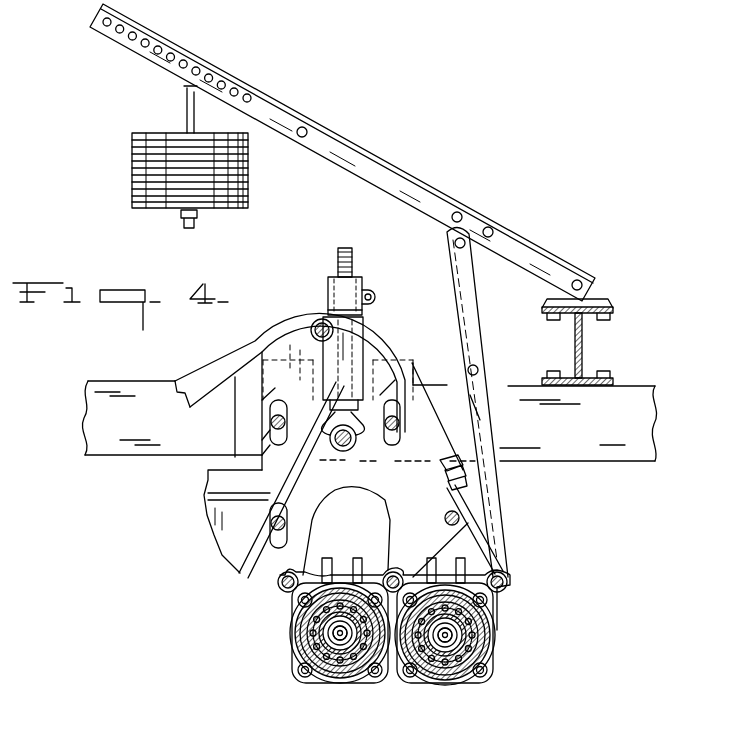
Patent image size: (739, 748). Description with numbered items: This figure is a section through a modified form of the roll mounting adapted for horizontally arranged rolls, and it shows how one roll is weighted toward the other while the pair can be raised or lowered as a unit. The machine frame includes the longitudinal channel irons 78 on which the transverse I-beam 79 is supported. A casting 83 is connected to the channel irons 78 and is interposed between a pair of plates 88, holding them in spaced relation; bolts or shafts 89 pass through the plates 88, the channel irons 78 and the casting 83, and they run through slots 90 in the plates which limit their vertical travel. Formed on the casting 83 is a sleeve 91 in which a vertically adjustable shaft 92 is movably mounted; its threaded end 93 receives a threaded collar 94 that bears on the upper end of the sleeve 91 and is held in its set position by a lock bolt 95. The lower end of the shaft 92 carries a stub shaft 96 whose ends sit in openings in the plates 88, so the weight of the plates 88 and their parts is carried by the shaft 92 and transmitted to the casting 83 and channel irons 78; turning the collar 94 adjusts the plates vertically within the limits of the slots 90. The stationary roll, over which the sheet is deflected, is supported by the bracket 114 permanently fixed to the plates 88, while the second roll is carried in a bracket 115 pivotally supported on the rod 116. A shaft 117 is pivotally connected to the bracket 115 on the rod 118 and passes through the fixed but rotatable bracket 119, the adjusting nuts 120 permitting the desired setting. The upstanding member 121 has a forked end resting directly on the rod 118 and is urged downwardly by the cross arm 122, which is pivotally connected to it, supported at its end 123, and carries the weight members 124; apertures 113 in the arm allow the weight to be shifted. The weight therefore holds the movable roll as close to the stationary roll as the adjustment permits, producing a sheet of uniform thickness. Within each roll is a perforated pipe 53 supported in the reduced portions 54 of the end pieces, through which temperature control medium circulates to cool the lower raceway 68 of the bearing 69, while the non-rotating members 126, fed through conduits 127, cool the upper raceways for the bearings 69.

The perforated pipe 53 is at (333, 683).
The reduced portion of end piece 54 is at (500, 630).
The lower raceway 68 is at (317, 648).
The bearing 69 is at (315, 633).
The channel iron 78 is at (632, 397).
The transverse I-beam 79 is at (581, 343).
The casting 83 is at (297, 322).
The plate 88 is at (280, 558).
The bolt or shaft 89 is at (273, 421).
The slot 90 is at (290, 500).
The sleeve 91 is at (357, 350).
The vertically adjustable shaft 92 is at (343, 333).
The threaded end 93 is at (340, 262).
The threaded collar 94 is at (357, 283).
The lock bolt 95 is at (375, 295).
The stub shaft 96 is at (340, 448).
The aperture 113 is at (243, 93).
The bracket 114 is at (285, 600).
The bracket 115 is at (498, 615).
The rod 116 is at (404, 560).
The shaft 117 is at (473, 527).
The rod 118 is at (507, 578).
The rotatable bracket 119 is at (467, 480).
The adjusting nut 120 is at (440, 477).
The upstanding member 121 is at (487, 398).
The cross arm 122 is at (345, 147).
The end of cross arm 123 is at (533, 257).
The weight member 124 is at (140, 168).
The member 126 is at (442, 643).
The conduit 127 is at (345, 557).